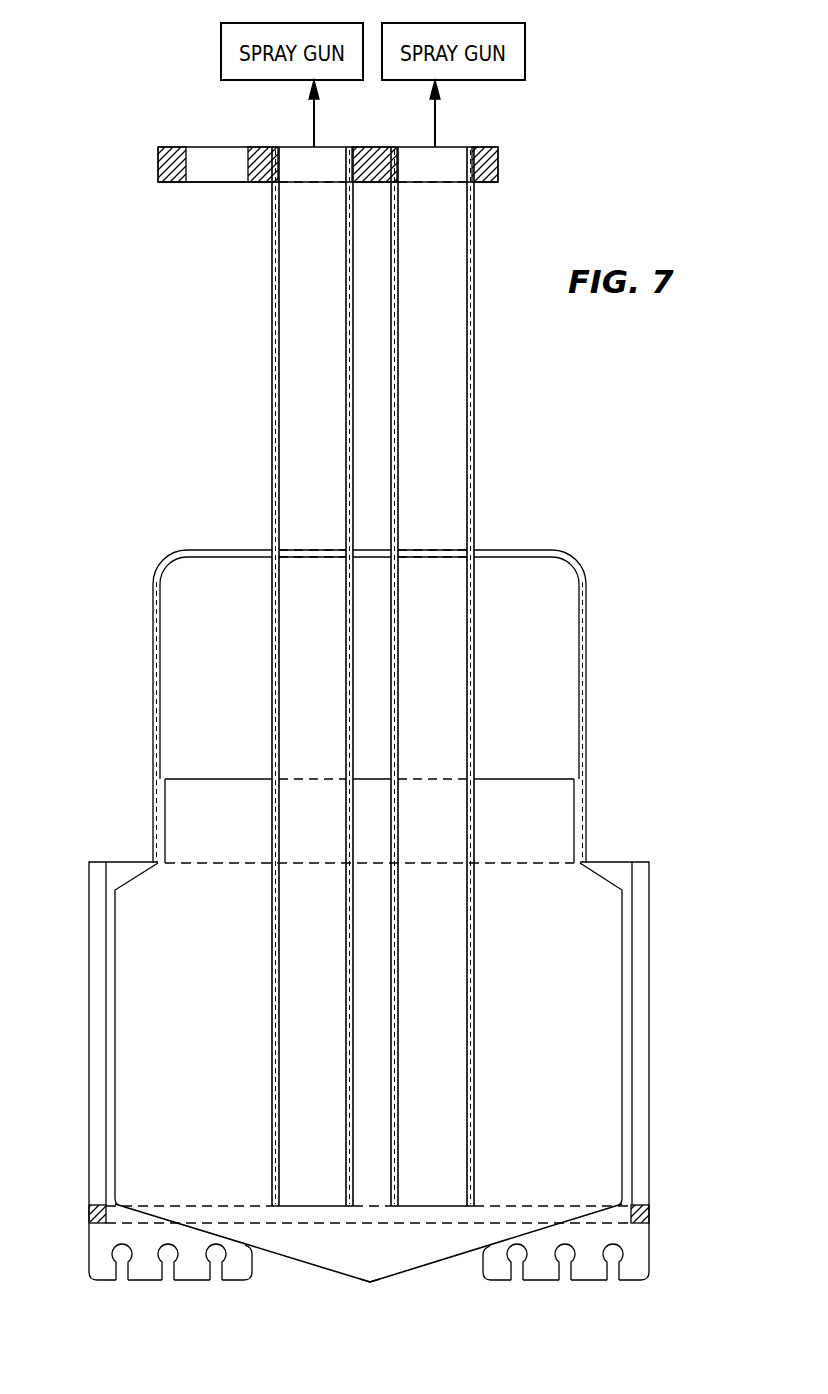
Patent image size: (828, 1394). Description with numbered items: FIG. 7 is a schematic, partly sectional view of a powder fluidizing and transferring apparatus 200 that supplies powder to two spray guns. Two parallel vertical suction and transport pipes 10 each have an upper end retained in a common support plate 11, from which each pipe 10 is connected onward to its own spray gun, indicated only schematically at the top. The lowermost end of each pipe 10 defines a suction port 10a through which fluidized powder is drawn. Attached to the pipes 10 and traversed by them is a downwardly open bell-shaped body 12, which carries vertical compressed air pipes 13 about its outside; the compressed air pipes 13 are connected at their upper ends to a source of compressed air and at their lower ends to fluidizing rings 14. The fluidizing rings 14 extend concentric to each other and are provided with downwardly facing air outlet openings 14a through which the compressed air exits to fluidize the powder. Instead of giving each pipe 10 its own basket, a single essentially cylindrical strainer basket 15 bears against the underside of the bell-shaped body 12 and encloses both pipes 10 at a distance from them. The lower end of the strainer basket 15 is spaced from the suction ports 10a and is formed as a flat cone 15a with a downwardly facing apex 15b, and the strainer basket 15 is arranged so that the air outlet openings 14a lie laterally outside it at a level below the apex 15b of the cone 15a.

The suction and transport pipe 10 is at (297, 399).
The suction port 10a is at (418, 1206).
The support plate 11 is at (490, 168).
The bell-shaped body 12 is at (586, 695).
The compressed air pipe 13 is at (640, 1053).
The fluidizing ring 14 is at (635, 1248).
The air outlet opening 14a is at (517, 1281).
The strainer basket 15 is at (590, 961).
The flat cone 15a is at (288, 1258).
The apex 15b is at (370, 1284).
The powder fluidizing and transferring apparatus 200 is at (527, 522).